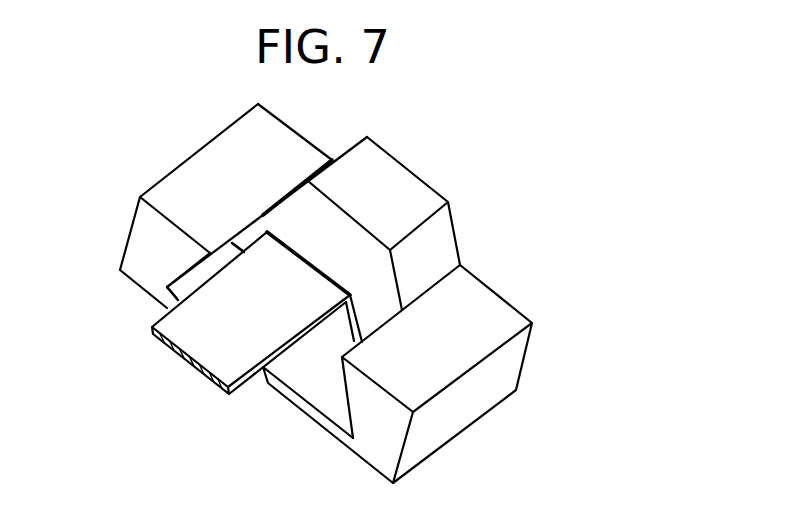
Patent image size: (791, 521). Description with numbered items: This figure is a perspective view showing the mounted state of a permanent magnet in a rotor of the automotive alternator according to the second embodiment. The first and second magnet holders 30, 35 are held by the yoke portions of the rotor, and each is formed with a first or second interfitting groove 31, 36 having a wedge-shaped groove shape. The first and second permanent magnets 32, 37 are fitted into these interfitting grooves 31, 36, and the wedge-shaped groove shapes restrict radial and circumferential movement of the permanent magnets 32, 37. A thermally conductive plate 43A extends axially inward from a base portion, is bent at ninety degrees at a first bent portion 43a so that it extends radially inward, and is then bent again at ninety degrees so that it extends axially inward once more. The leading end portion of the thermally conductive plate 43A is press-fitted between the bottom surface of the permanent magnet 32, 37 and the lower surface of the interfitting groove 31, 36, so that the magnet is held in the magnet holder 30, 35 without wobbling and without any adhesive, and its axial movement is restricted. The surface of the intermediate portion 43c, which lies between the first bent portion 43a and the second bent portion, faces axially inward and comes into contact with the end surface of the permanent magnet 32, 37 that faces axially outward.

The first permanent magnet 32 is at (333, 207).
The second permanent magnet 37 is at (418, 185).
The first magnet holder 30 is at (487, 360).
The second magnet holder 35 is at (497, 304).
The first interfitting groove 31 is at (328, 431).
The second interfitting groove 36 is at (344, 411).
The thermally conductive plate 43A is at (187, 318).
The first bent portion 43a is at (303, 257).
The intermediate portion 43c is at (341, 326).